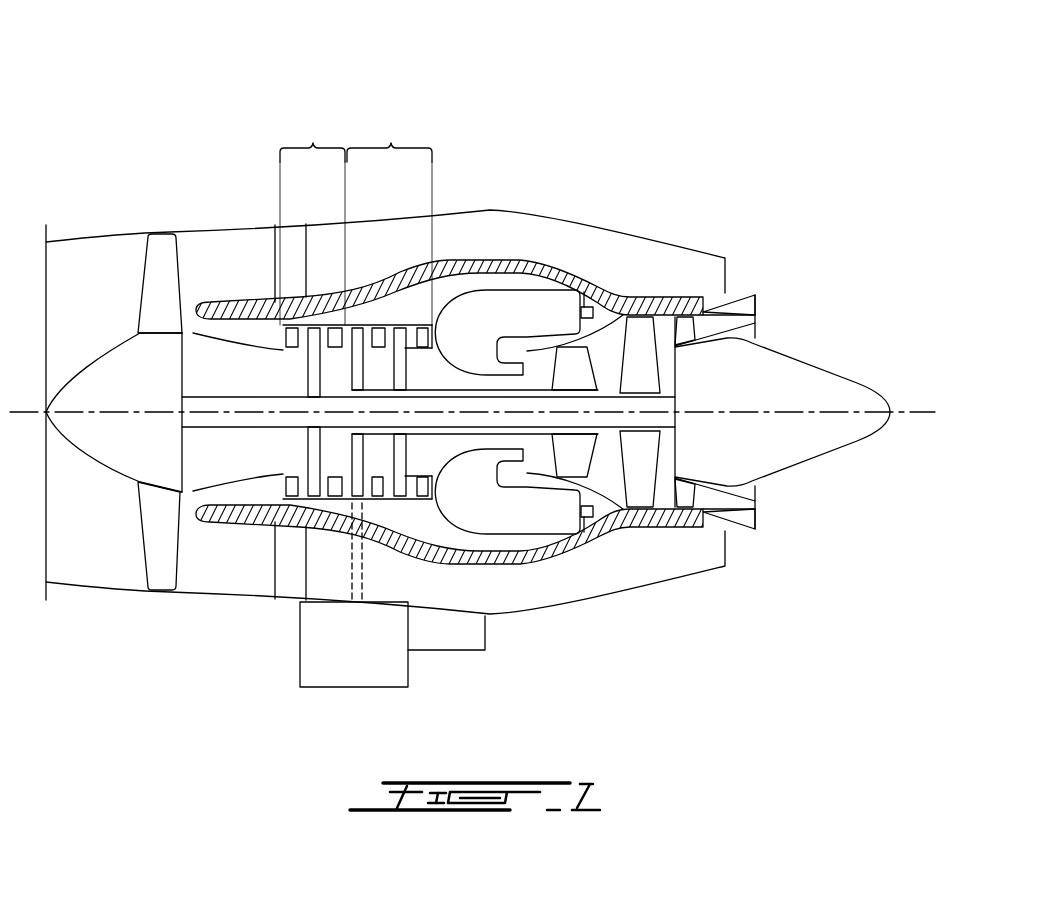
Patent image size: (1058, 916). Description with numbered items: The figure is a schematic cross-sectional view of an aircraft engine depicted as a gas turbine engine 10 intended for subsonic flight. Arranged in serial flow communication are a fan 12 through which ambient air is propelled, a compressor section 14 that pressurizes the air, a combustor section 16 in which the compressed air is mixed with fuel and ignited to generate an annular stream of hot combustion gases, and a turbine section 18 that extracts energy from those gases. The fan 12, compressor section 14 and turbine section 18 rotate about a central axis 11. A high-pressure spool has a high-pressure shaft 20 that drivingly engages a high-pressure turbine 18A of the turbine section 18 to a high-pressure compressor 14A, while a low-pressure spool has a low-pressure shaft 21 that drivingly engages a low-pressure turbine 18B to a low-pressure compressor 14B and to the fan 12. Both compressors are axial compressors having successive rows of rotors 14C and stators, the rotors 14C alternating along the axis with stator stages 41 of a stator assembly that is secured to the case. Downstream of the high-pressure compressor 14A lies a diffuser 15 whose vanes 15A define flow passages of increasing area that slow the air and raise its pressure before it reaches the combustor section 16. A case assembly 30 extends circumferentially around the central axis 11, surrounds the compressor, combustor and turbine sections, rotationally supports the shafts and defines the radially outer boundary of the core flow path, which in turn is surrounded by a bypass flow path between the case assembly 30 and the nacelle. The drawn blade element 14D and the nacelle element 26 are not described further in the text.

The gas turbine engine 10 is at (648, 123).
The central axis 11 is at (914, 412).
The fan 12 is at (157, 528).
The compressor section 14 is at (422, 296).
The high-pressure compressor 14A is at (278, 623).
The low-pressure compressor 14B is at (193, 623).
The rotors 14C is at (356, 328).
The compressor blade 14D is at (292, 496).
The diffuser 15 is at (444, 323).
The vanes 15A is at (428, 337).
The combustor section 16 is at (510, 307).
The turbine section 18 is at (607, 460).
The high-pressure turbine 18A is at (577, 367).
The low-pressure turbine 18B is at (636, 345).
The high-pressure shaft 20 is at (453, 437).
The low-pressure shaft 21 is at (232, 397).
The bypass duct nacelle 26 is at (663, 292).
The case assembly 30 is at (402, 238).
The stator stages 41 is at (420, 347).